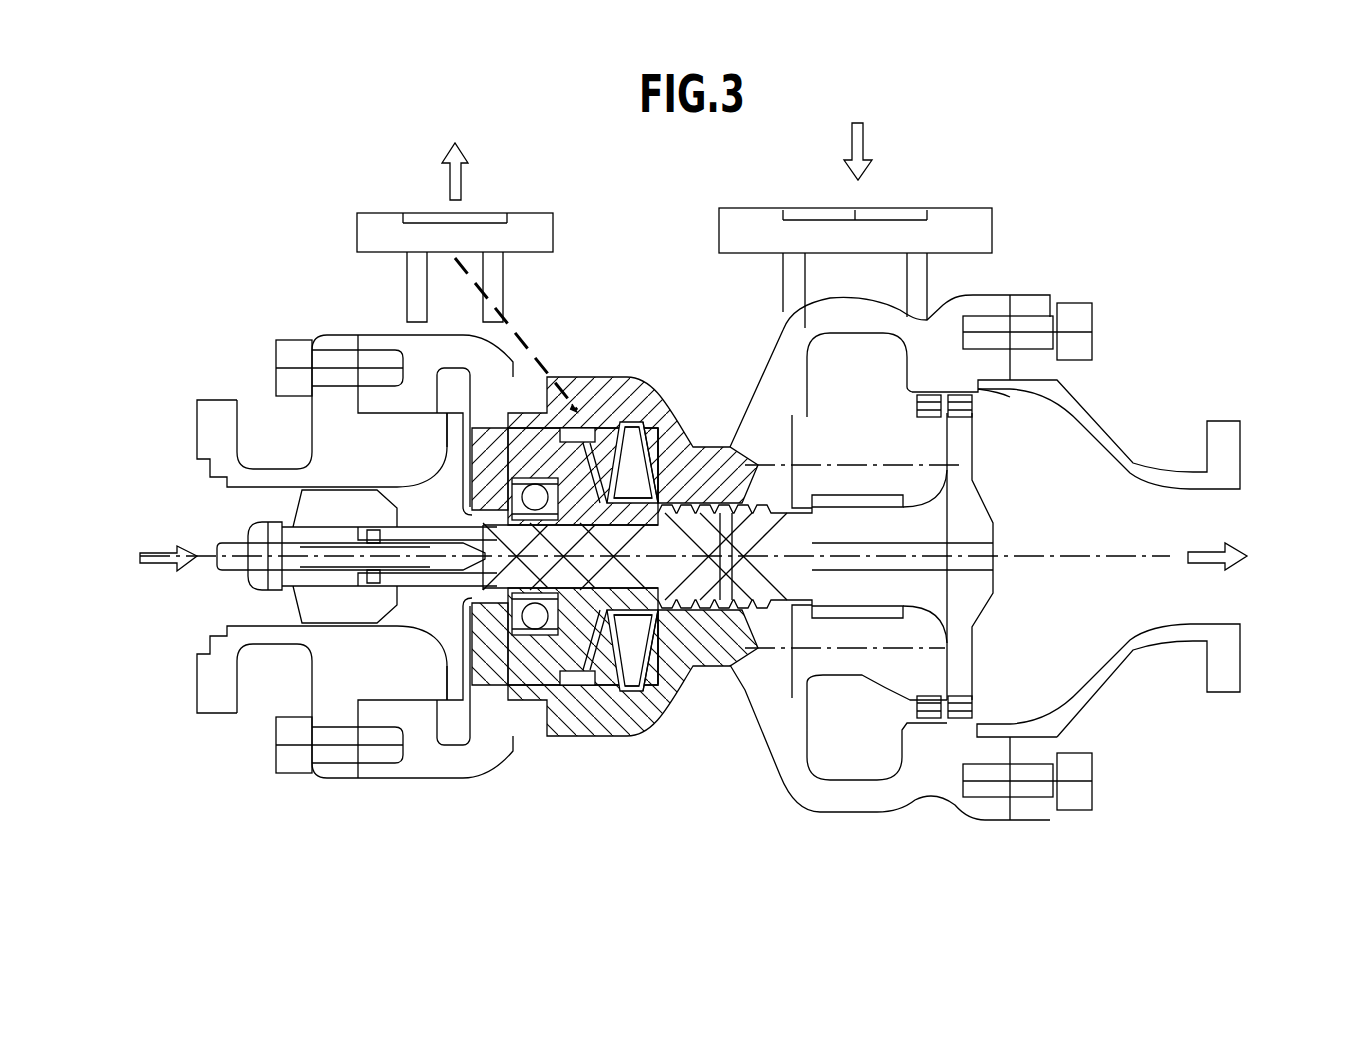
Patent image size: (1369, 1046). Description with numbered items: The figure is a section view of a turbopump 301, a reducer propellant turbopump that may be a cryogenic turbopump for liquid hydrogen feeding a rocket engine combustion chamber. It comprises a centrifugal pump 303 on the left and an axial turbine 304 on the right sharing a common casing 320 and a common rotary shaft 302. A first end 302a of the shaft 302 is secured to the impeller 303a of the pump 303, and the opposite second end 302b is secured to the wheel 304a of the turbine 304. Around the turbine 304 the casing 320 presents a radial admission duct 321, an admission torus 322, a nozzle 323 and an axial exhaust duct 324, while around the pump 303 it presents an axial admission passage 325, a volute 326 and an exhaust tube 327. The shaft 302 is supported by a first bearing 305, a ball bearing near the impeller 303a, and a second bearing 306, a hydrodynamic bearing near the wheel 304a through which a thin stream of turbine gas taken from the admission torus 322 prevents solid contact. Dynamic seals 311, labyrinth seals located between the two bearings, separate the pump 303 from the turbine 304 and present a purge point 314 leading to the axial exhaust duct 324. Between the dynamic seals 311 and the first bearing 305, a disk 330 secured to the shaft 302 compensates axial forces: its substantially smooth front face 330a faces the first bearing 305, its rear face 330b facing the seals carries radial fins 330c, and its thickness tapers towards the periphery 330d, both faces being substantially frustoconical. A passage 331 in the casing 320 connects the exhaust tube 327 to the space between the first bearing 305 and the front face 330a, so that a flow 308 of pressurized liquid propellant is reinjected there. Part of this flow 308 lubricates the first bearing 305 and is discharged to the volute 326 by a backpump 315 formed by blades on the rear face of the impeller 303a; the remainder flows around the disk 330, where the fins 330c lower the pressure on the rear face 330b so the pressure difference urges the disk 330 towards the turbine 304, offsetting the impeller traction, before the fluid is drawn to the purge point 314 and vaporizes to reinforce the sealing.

The turbopump 301 is at (238, 760).
The rotary shaft 302 is at (765, 587).
The first end of the shaft 302a is at (418, 618).
The second end of the shaft 302b is at (937, 592).
The centrifugal pump 303 is at (346, 420).
The impeller 303a is at (452, 440).
The axial turbine 304 is at (925, 352).
The wheel 304a is at (986, 404).
The first bearing 305 is at (535, 468).
The second bearing 306 is at (863, 616).
The flow of liquid propellant 308 is at (533, 345).
The dynamic seals 311 is at (697, 523).
The purge point 314 is at (716, 608).
The backpump 315 is at (500, 705).
The casing 320 is at (762, 388).
The radial admission duct 321 is at (872, 228).
The admission torus 322 is at (870, 772).
The nozzle 323 is at (907, 398).
The axial exhaust duct 324 is at (1250, 598).
The axial admission passage 325 is at (235, 513).
The volute 326 is at (455, 730).
The exhaust tube 327 is at (470, 238).
The disk 330 is at (645, 422).
The front face 330a is at (607, 427).
The rear face 330b is at (650, 447).
The radial fins 330c is at (648, 692).
The periphery 330d is at (640, 700).
The passage 331 is at (572, 685).